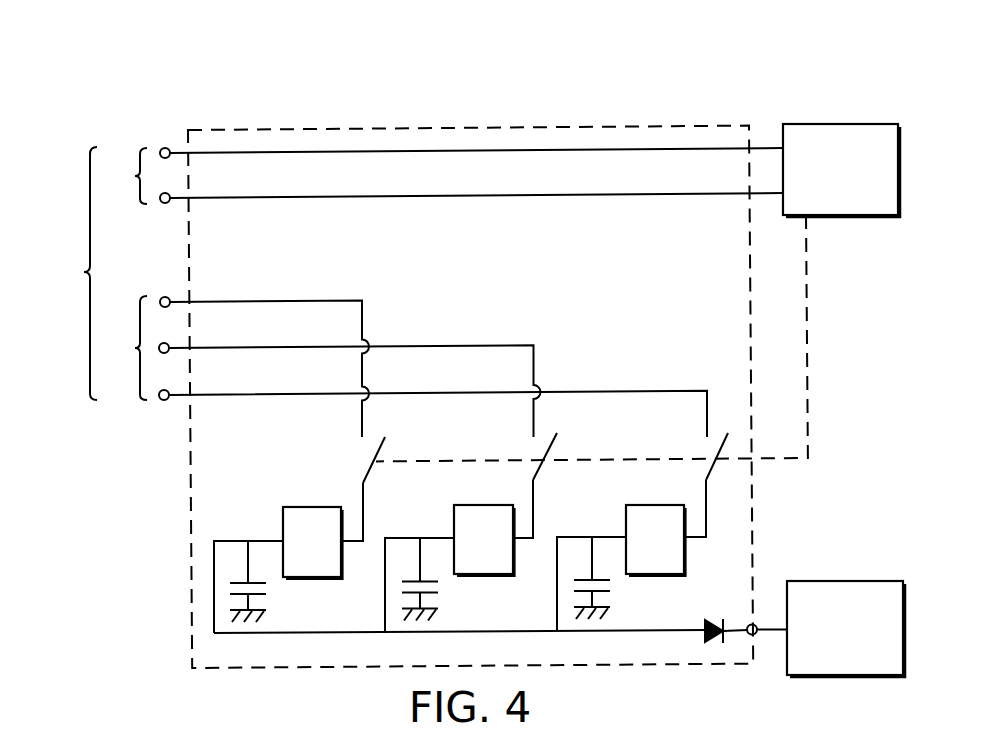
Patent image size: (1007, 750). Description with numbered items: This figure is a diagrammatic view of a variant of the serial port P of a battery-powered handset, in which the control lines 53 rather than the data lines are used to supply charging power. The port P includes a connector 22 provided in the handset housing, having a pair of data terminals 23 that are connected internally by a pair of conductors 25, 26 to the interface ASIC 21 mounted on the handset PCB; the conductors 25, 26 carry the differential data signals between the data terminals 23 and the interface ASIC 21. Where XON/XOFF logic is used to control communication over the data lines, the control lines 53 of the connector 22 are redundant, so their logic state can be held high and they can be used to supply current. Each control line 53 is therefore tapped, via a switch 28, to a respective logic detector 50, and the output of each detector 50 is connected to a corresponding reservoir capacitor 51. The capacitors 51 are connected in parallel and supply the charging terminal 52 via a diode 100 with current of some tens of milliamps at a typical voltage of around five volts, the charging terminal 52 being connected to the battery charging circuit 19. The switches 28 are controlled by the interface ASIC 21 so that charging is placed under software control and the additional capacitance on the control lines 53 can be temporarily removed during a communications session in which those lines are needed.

The serial port P is at (697, 117).
The connector 22 is at (73, 273).
The data terminals 23 is at (136, 176).
The conductor 25 is at (290, 150).
The conductor 26 is at (290, 200).
The interface ASIC 21 is at (826, 180).
The control lines 53 is at (405, 366).
The switch 28 is at (374, 458).
The logic detector 50 is at (299, 552).
The reservoir capacitor 51 is at (266, 596).
The diode 100 is at (710, 617).
The charging terminal 52 is at (755, 636).
The battery charging circuit 19 is at (831, 639).